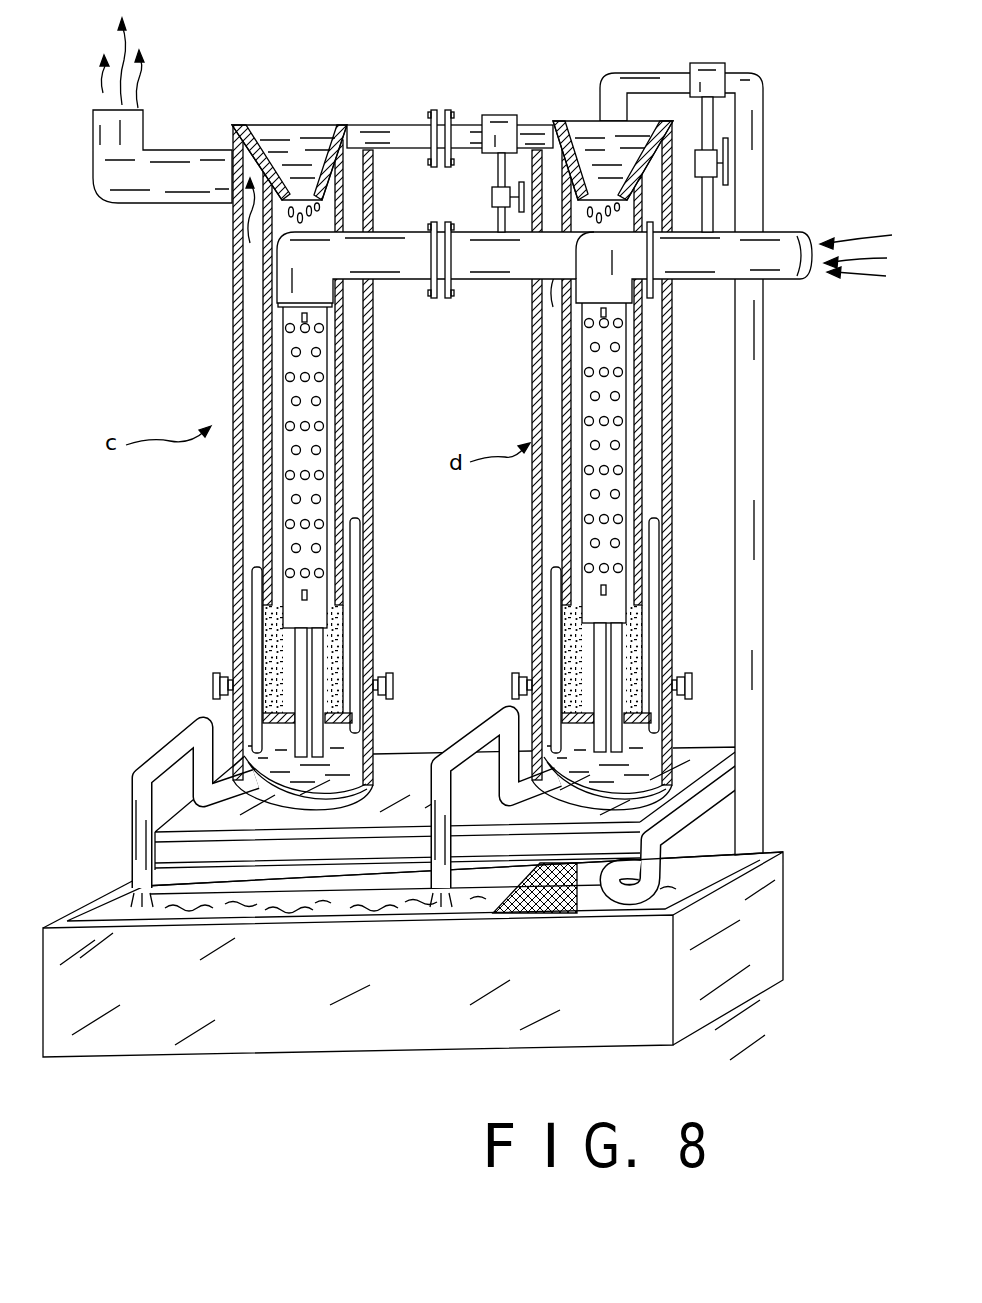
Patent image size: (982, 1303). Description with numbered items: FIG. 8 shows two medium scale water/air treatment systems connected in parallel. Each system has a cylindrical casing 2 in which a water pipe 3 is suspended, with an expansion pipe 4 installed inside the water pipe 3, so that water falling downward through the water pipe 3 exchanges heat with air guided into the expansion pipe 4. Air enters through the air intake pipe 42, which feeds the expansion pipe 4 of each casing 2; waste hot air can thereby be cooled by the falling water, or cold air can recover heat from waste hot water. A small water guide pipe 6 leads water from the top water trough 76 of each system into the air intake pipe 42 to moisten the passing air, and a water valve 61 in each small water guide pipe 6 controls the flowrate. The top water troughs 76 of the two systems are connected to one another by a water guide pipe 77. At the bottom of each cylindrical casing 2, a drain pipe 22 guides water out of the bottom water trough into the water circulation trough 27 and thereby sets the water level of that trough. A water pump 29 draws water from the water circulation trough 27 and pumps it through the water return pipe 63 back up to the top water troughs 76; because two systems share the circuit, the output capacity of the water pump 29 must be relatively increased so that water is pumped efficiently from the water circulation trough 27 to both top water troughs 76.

The cylindrical casing 2 is at (233, 332).
The water pipe 3 is at (263, 378).
The expansion pipe 4 is at (320, 410).
The small water guide pipe 6 is at (498, 175).
The water valve 61 is at (492, 197).
The drain pipe 22 is at (160, 752).
The water circulation trough 27 is at (307, 1042).
The water pump 29 is at (664, 862).
The air intake pipe 42 is at (485, 265).
The water return pipe 63 is at (765, 455).
The top water trough 76 is at (288, 150).
The water guide pipe 77 is at (408, 135).